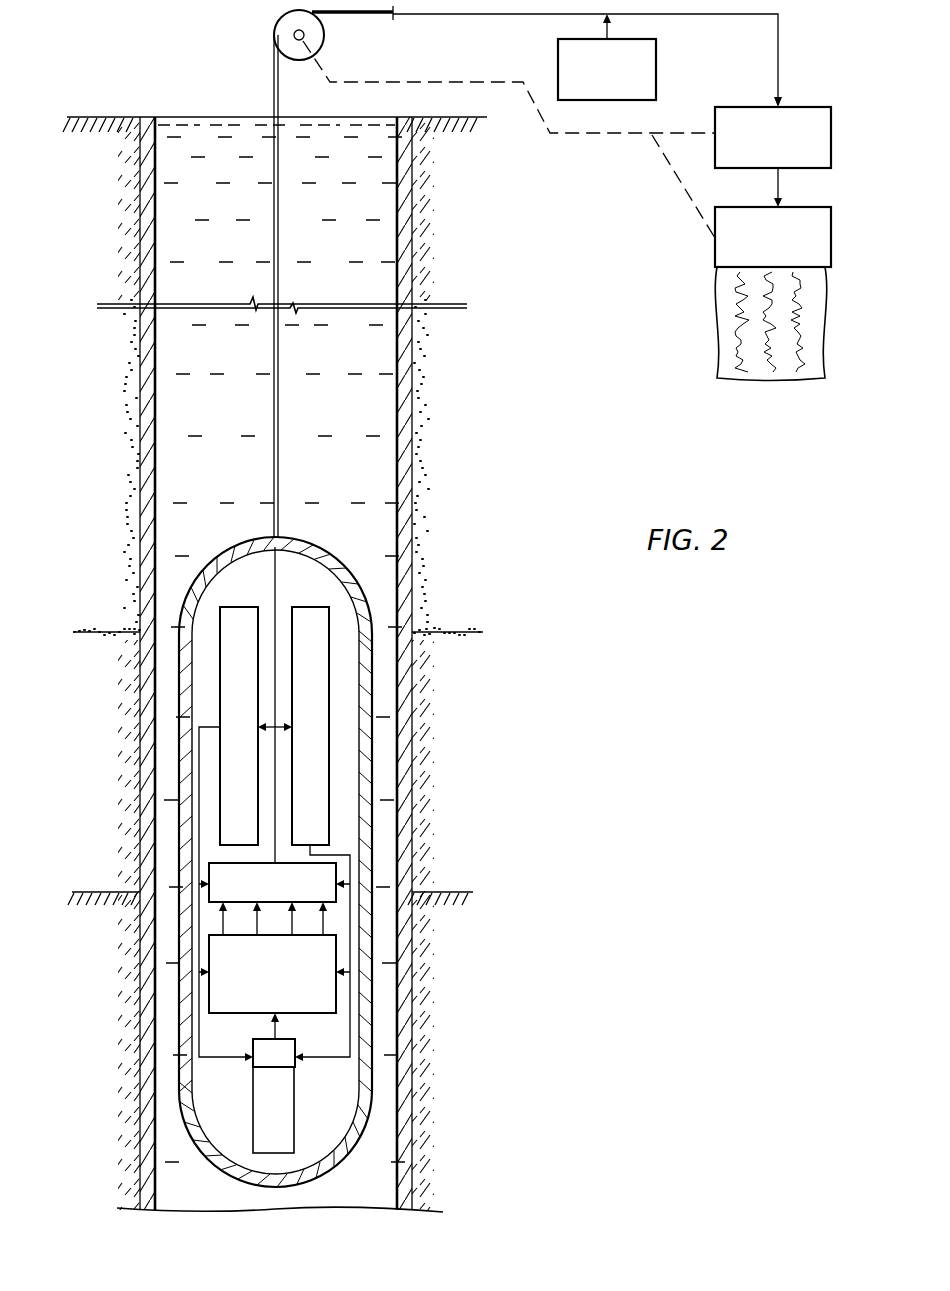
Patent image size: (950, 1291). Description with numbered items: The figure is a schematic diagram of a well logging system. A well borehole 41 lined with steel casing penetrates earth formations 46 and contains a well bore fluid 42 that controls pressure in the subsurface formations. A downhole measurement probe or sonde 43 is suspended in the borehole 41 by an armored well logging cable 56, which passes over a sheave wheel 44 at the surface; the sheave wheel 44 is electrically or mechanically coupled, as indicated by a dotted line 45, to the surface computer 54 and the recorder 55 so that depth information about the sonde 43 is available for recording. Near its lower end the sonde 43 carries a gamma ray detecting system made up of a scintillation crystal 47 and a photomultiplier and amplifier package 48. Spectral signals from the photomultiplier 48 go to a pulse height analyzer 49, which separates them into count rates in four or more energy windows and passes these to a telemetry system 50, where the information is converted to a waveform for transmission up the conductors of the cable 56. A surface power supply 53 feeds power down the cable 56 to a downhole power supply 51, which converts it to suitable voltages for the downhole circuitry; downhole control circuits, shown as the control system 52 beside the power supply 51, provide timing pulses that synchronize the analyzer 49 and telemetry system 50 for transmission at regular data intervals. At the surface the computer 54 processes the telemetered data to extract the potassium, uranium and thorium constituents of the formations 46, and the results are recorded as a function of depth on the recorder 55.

The well borehole 41 is at (187, 112).
The well bore fluid 42 is at (349, 219).
The downhole measurement probe or sonde 43 is at (350, 570).
The sheave wheel 44 is at (277, 30).
The dotted line 45 is at (429, 82).
The earth formations 46 is at (118, 445).
The scintillation crystal 47 is at (295, 1123).
The photomultiplier and amplifier package 48 is at (296, 1063).
The pulse height analyzer 49 is at (338, 955).
The telemetry system 50 is at (338, 870).
The downhole power supply 51 is at (219, 627).
The control system 52 is at (330, 630).
The surface power supply 53 is at (657, 58).
The surface computer 54 is at (803, 107).
The recorder 55 is at (714, 250).
The armored well logging cable 56 is at (273, 78).